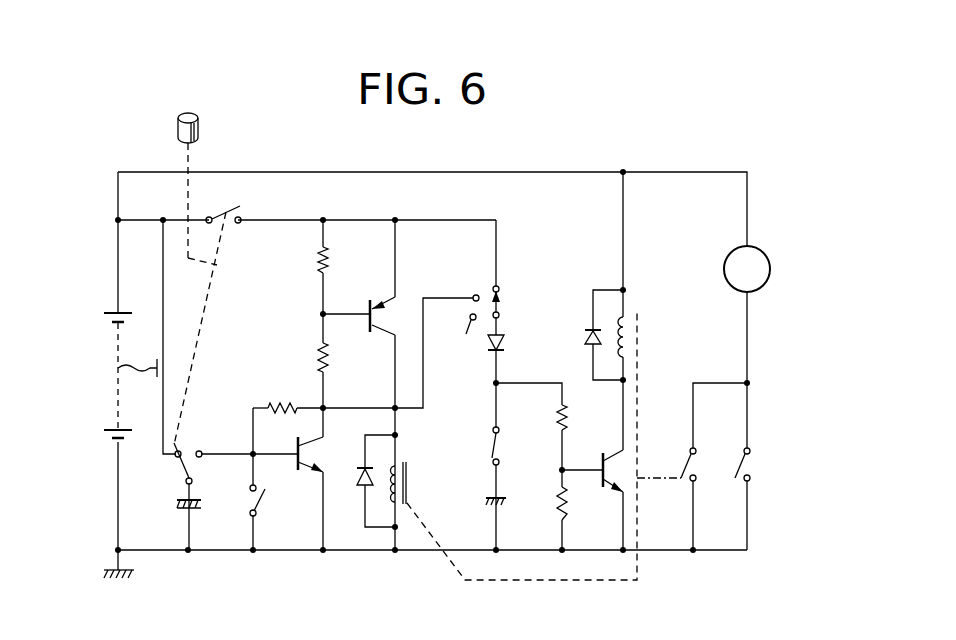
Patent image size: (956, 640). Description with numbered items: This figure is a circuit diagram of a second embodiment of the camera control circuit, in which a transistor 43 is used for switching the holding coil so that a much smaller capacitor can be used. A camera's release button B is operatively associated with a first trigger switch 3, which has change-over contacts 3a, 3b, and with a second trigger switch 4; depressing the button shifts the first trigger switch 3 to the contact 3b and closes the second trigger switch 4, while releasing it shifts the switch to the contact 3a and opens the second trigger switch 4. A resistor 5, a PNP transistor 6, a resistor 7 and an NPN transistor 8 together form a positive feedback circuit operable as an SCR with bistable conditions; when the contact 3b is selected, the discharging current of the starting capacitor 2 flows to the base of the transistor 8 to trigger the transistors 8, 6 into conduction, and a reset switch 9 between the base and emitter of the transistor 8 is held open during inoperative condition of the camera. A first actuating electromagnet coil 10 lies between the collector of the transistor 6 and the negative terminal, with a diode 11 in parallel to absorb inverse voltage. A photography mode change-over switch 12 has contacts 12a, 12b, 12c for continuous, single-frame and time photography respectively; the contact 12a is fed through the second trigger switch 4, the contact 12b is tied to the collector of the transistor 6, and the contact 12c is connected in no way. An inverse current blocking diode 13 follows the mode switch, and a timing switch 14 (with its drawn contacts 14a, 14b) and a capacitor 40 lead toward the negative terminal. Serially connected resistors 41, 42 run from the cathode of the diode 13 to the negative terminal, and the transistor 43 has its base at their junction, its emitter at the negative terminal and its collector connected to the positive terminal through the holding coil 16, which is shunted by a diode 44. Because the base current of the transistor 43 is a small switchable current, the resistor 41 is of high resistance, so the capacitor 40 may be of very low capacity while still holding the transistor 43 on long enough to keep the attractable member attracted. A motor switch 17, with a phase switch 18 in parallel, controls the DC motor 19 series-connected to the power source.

The release button B is at (200, 126).
The starting capacitor 2 is at (175, 507).
The first trigger switch 3 is at (188, 450).
The change-over contact 3a is at (180, 463).
The change-over contact 3b is at (201, 457).
The second trigger switch 4 is at (218, 212).
The resistor 5 is at (318, 352).
The PNP transistor 6 is at (368, 319).
The resistor 7 is at (282, 402).
The NPN transistor 8 is at (323, 457).
The reset switch 9 is at (266, 498).
The first actuating electromagnet coil 10 is at (410, 475).
The diode 11 is at (358, 483).
The photography mode change-over switch 12 is at (499, 314).
The change-over contact 12a is at (500, 286).
The change-over contact 12b is at (475, 294).
The change-over contact 12c is at (451, 329).
The inverse current blocking diode 13 is at (504, 343).
The timing switch 14 is at (500, 461).
The switch contact 14a is at (494, 440).
The switch contact 14b is at (499, 428).
The second electromagnet coil 16 is at (636, 310).
The motor switch 17 is at (684, 462).
The phase switch 18 is at (743, 461).
The DC motor 19 is at (752, 248).
The capacitor 40 is at (486, 498).
The resistor 41 is at (568, 411).
The resistor 42 is at (570, 507).
The transistor 43 is at (610, 453).
The diode 44 is at (588, 334).